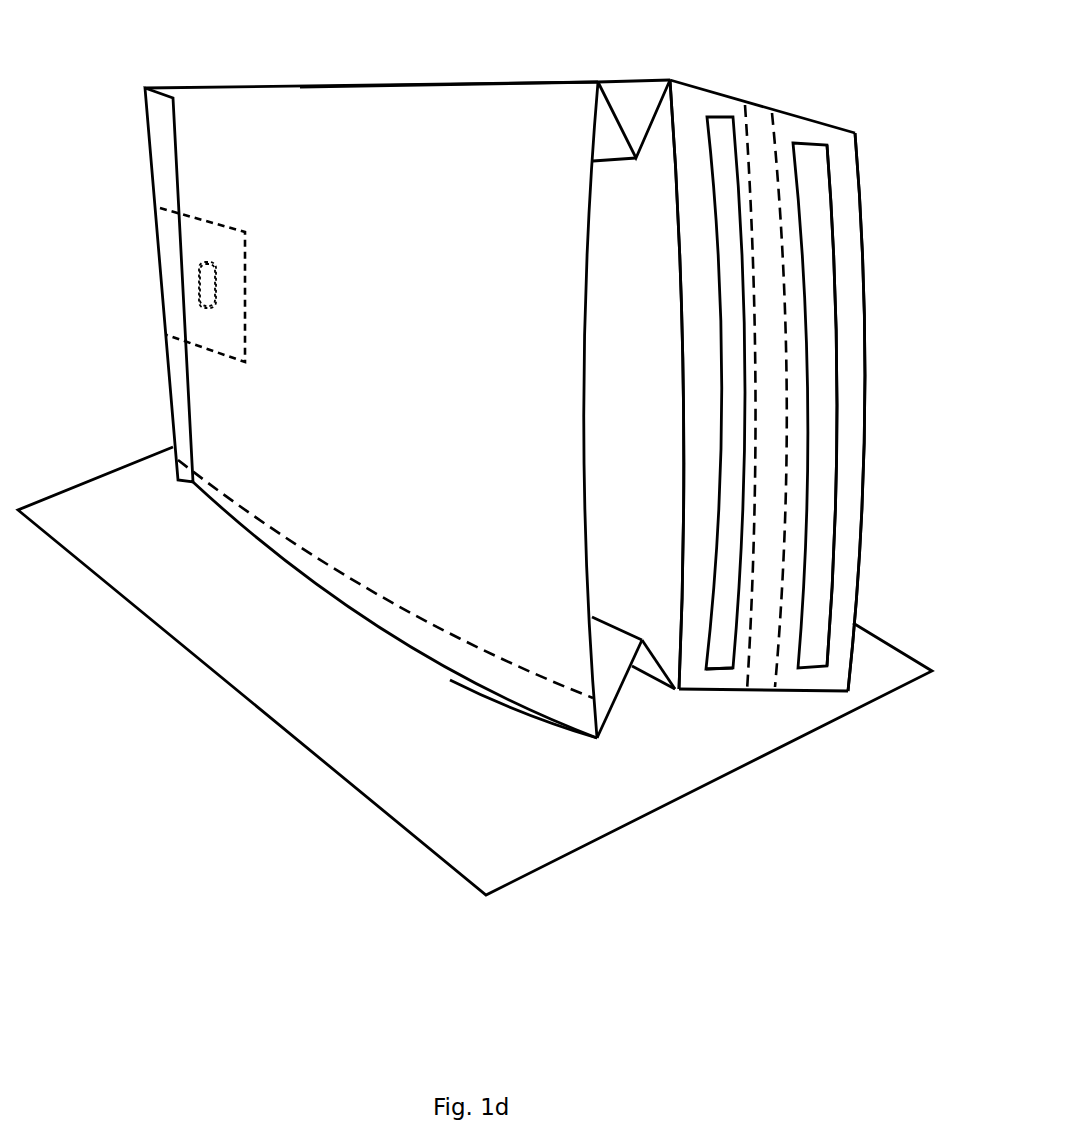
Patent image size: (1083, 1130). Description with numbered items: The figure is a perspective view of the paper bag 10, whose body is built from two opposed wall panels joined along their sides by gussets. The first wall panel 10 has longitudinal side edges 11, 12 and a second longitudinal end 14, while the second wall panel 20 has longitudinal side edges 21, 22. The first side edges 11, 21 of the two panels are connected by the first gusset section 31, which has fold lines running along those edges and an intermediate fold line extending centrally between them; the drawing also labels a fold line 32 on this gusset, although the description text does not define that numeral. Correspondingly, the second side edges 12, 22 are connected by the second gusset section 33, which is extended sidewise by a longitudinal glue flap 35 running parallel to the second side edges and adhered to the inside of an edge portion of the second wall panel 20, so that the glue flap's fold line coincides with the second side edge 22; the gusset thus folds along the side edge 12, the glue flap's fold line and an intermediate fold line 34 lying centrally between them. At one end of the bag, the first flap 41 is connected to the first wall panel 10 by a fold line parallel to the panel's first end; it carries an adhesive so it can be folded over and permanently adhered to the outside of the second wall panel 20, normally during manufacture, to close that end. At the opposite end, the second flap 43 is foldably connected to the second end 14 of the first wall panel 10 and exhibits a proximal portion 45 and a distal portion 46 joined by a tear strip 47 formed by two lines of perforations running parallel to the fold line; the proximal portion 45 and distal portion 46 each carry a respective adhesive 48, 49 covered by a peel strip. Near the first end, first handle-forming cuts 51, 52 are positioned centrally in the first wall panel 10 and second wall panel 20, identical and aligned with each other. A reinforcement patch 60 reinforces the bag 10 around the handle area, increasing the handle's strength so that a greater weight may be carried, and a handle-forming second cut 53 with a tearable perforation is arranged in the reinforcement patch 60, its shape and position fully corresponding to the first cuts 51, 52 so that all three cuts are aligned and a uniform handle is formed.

The bag 10 is at (606, 397).
The first longitudinal side edge of first wall panel 11 is at (645, 82).
The second longitudinal side edge of first wall panel 12 is at (653, 719).
The second longitudinal end of first wall panel 14 is at (676, 125).
The second wall panel 20 is at (404, 387).
The first longitudinal side edge of second wall panel 21 is at (472, 82).
The second longitudinal side edge of second wall panel 22 is at (570, 730).
The first gusset section 31 is at (623, 74).
The top gusset fold line 32 is at (630, 165).
The second gusset section 33 is at (628, 727).
The intermediate fold line 34 is at (623, 625).
The glue flap 35 is at (493, 677).
The first flap 41 is at (165, 88).
The second flap 43 is at (848, 127).
The proximal portion 45 is at (705, 692).
The distal portion 46 is at (822, 692).
The tear strip 47 is at (757, 107).
The adhesive 48 is at (708, 667).
The adhesive 49 is at (838, 463).
The first handle-forming cut 51 is at (274, 288).
The first handle-forming cut 52 is at (208, 262).
The second cut 53 is at (215, 288).
The reinforcement patch 60 is at (247, 250).